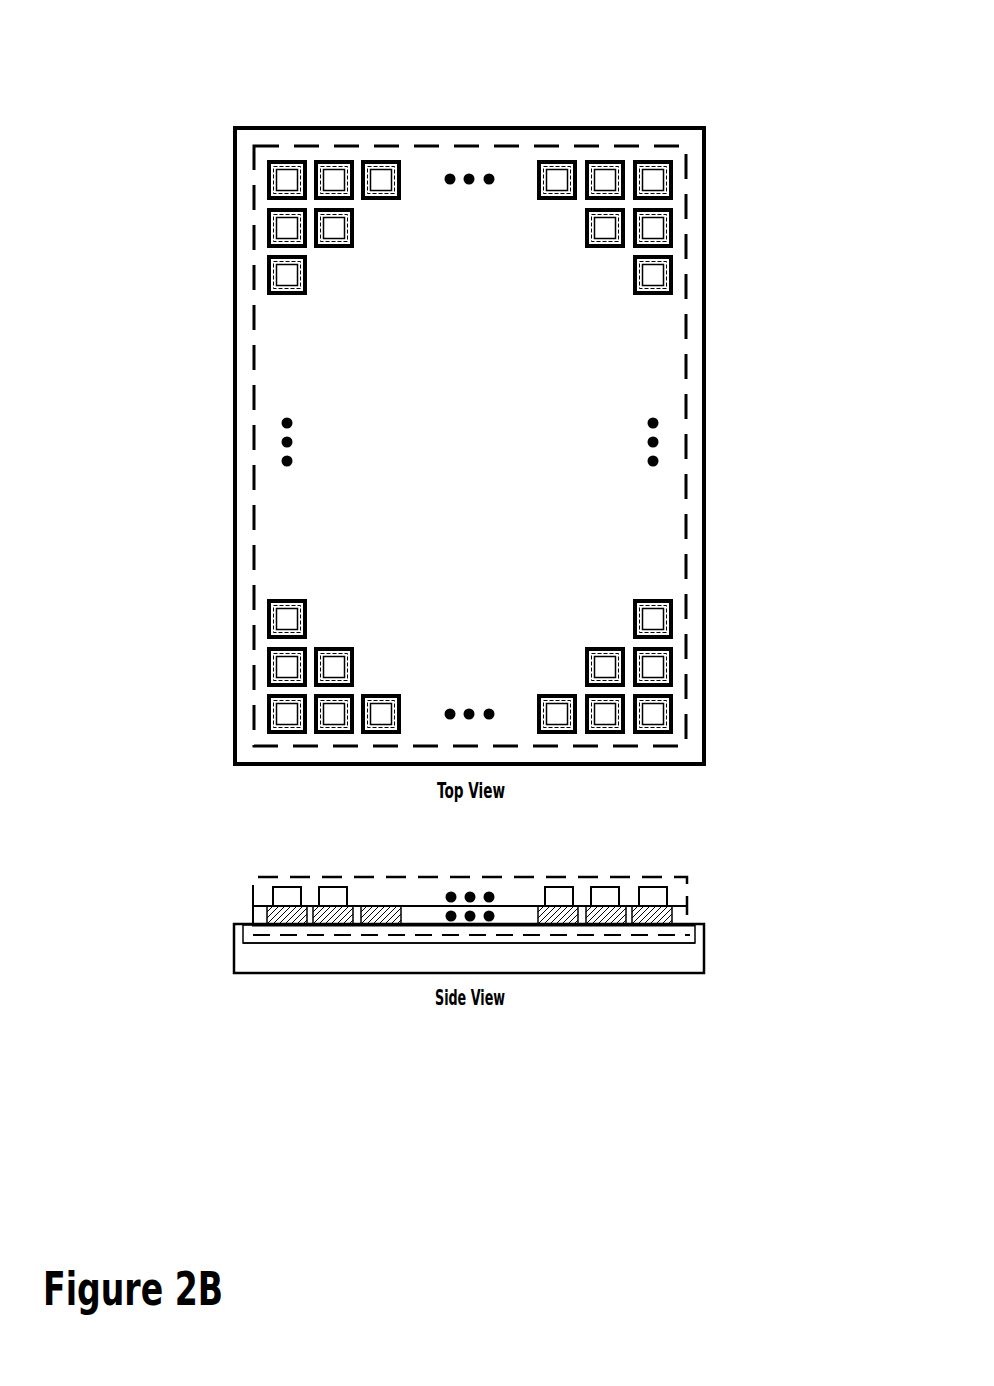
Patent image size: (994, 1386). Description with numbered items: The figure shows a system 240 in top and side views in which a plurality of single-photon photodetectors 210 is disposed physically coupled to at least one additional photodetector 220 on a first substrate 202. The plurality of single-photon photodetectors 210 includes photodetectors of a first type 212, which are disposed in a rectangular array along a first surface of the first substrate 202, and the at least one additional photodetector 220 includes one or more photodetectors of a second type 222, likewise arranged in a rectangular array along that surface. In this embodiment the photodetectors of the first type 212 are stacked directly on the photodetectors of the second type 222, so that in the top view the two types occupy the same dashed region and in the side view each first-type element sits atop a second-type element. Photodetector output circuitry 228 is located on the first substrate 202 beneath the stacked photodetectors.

The system 240 is at (843, 95).
The first substrate 202 is at (471, 128).
The plurality of single-photon photodetectors 210 is at (649, 749).
The at least one additional photodetector 220 is at (256, 917).
The photodetectors of a first type 212 is at (380, 179).
The photodetectors of a second type 222 is at (650, 161).
The photodetector output circuitry 228 is at (393, 943).